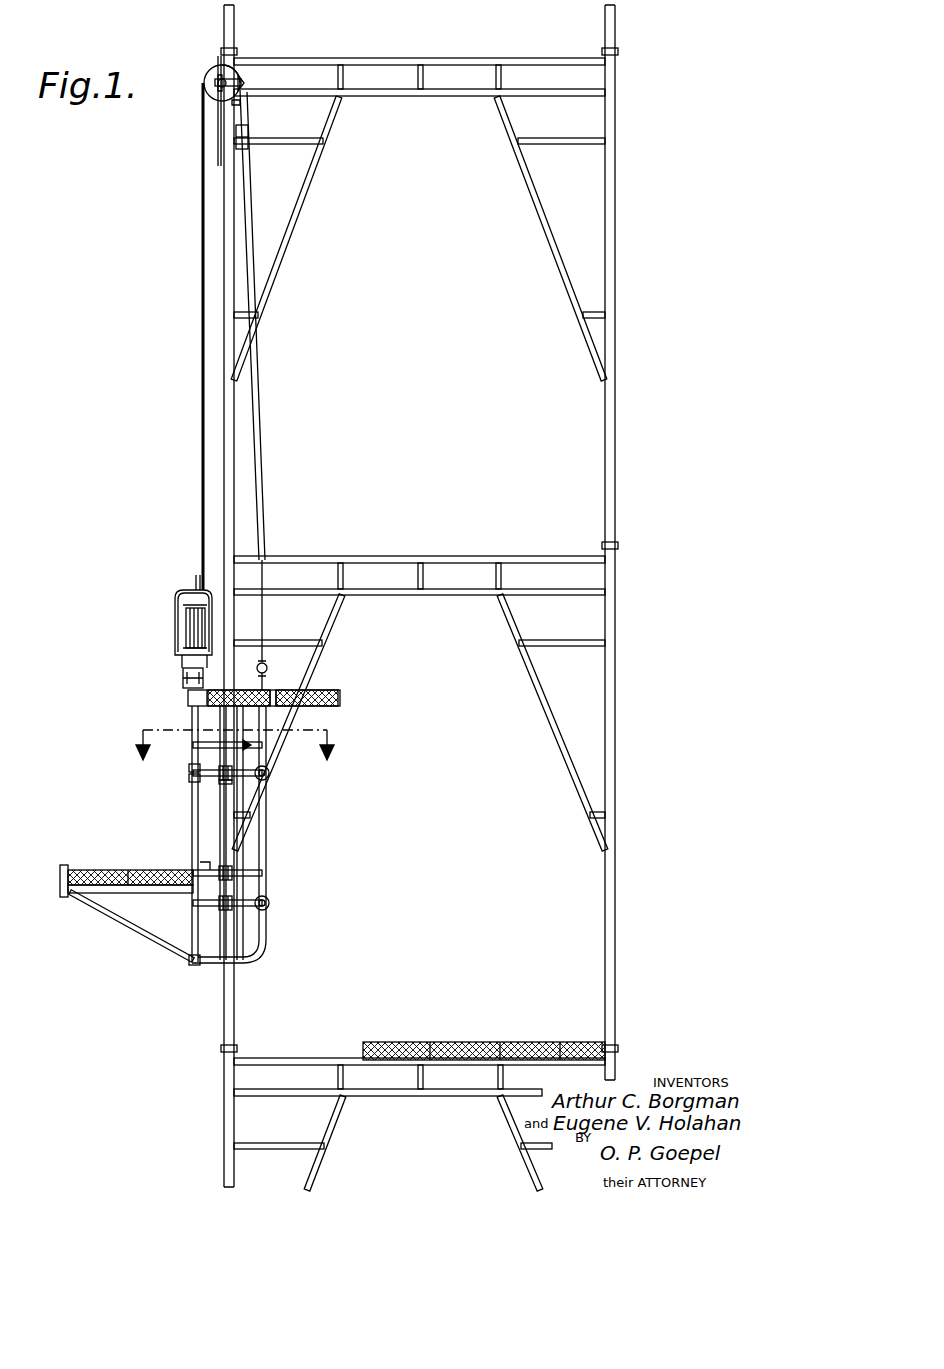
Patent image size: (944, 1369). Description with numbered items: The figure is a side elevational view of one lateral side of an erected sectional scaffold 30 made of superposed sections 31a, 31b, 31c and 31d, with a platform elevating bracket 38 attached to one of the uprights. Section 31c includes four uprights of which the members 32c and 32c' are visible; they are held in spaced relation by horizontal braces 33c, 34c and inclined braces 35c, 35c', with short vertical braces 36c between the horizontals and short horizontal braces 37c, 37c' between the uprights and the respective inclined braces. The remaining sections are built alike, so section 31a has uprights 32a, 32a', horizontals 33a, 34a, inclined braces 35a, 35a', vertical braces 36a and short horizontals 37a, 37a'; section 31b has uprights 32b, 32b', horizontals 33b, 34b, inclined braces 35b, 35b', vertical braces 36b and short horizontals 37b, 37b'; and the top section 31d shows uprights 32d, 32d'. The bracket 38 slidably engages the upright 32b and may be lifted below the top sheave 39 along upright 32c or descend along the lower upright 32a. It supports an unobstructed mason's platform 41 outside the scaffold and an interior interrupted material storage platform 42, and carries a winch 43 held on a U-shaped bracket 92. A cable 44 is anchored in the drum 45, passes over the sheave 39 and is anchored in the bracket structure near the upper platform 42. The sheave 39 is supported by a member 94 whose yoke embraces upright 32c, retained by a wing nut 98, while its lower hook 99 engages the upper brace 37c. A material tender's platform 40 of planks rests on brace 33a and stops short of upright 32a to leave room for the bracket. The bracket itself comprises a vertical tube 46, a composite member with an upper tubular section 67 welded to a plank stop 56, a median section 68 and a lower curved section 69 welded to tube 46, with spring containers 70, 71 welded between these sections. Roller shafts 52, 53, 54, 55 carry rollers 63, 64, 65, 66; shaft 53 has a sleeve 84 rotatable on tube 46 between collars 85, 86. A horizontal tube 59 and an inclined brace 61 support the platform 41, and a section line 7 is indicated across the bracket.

The scaffold 30 is at (672, 636).
The scaffold section 31a is at (210, 1142).
The scaffold section 31b is at (628, 918).
The scaffold section 31c is at (626, 437).
The scaffold section 31d is at (632, 40).
The lower upright 32a is at (253, 1118).
The upright 32a' is at (643, 1063).
The upright 32b is at (254, 806).
The upright 32b' is at (640, 800).
The upright 32c is at (272, 307).
The upright 32c' is at (640, 301).
The upright 32d is at (251, 30).
The upright 32d' is at (635, 30).
The horizontal brace 33a is at (296, 1058).
The horizontal brace 33b is at (390, 556).
The horizontal brace 33c is at (468, 52).
The horizontal brace 34a is at (384, 1096).
The horizontal brace 34b is at (470, 596).
The horizontal brace 34c is at (482, 97).
The inclined brace 35a is at (336, 1143).
The inclined brace 35a' is at (502, 1143).
The inclined brace 35b is at (308, 722).
The inclined brace 35b' is at (552, 722).
The inclined brace 35c is at (288, 238).
The inclined brace 35c' is at (550, 238).
The short vertical brace 36a is at (338, 1078).
The short vertical brace 36b is at (344, 568).
The short vertical brace 36c is at (420, 76).
The short horizontal brace 37a is at (279, 1161).
The short horizontal brace 37a' is at (516, 1162).
The short horizontal brace 37b is at (278, 729).
The short horizontal brace 37b' is at (562, 729).
The short horizontal brace 37c is at (278, 228).
The short horizontal brace 37c' is at (561, 228).
The platform elevating bracket 38 is at (168, 680).
The top sheave 39 is at (208, 72).
The material tender's platform 40 is at (518, 1042).
The mason's platform 41 is at (110, 870).
The material storage platform 42 is at (276, 690).
The winch 43 is at (174, 610).
The cable 44 is at (257, 432).
The drum 45 is at (188, 590).
The vertical tube 46 is at (194, 832).
The roller shaft 52 is at (248, 742).
The roller shaft 53 is at (266, 768).
The roller shaft 54 is at (204, 868).
The roller shaft 55 is at (254, 912).
The plank stop 56 is at (342, 696).
The horizontal tube 59 is at (130, 890).
The inclined brace 61 is at (144, 932).
The roller 63 is at (222, 740).
The roller 64 is at (224, 782).
The roller 65 is at (224, 866).
The roller 66 is at (222, 910).
The upper tubular section 67 is at (262, 734).
The median section 68 is at (268, 864).
The lower curved section 69 is at (266, 952).
The spring container 70 is at (268, 778).
The spring container 71 is at (270, 906).
The sleeve 84 is at (192, 768).
The collar 85 is at (224, 768).
The collar 86 is at (192, 782).
The U-shaped bracket 92 is at (180, 684).
The member 94 is at (216, 154).
The wing nut 98 is at (244, 80).
The hook 99 is at (246, 134).
The section line 7- 7 is at (235, 756).